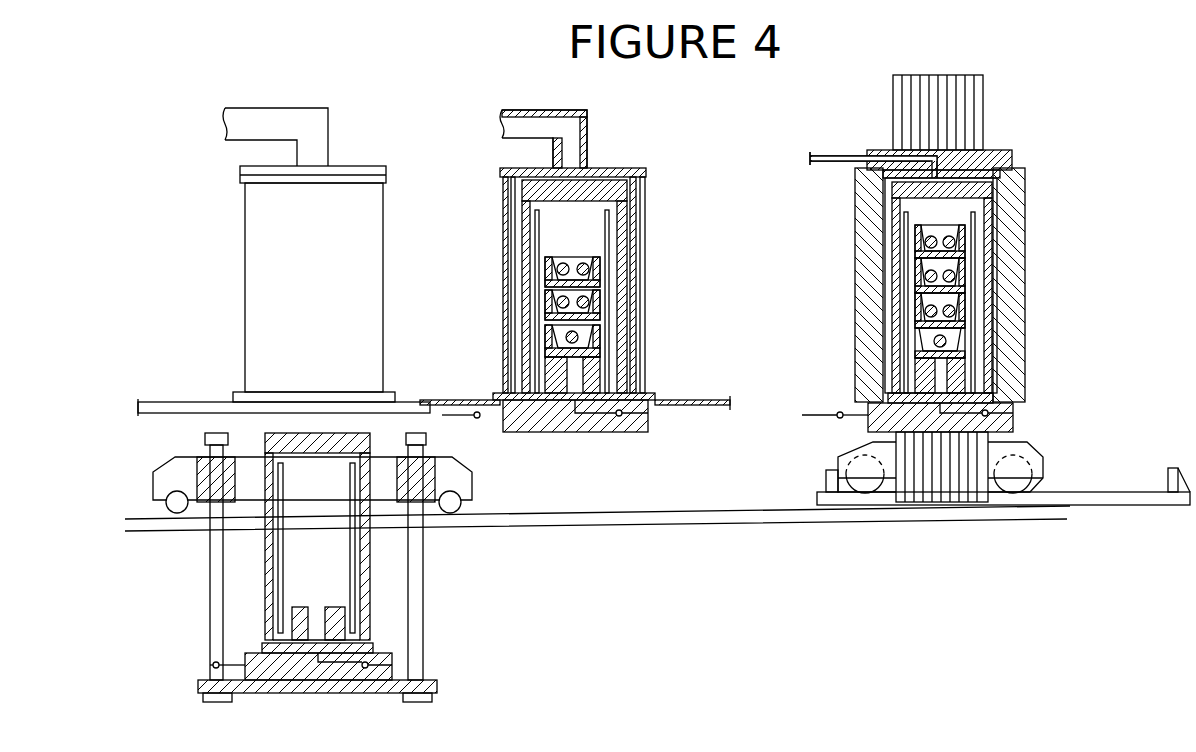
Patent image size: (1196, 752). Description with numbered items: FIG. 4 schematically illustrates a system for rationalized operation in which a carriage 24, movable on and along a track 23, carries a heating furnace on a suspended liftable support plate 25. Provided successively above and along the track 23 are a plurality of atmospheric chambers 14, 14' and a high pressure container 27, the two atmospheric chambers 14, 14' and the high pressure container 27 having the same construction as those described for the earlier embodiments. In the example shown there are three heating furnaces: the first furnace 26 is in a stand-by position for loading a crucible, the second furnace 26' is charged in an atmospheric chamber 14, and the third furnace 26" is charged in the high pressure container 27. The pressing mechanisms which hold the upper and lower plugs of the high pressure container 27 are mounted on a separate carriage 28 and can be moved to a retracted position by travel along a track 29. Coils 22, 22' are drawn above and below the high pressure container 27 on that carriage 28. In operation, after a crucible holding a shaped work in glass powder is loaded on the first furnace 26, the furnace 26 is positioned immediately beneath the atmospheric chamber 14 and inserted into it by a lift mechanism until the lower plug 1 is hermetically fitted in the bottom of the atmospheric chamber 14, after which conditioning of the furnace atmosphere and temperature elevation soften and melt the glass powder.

The atmospheric chamber 14 is at (294, 255).
The atmospheric chamber 14' is at (548, 271).
The second heating furnace 26' is at (582, 254).
The magnet coil 22 is at (973, 112).
The high pressure container 27 is at (1027, 283).
The lower magnet coil 22' is at (942, 502).
The carriage 28 is at (1035, 460).
The track 29 is at (1113, 505).
The first heating furnace 26 is at (269, 536).
The carriage 24 is at (420, 490).
The track 23 is at (672, 527).
The lower plug 1 is at (290, 675).
The support plate 25 is at (308, 688).